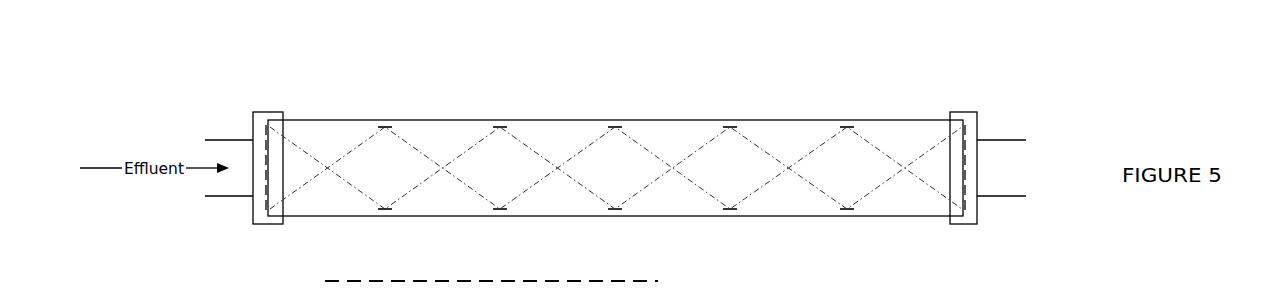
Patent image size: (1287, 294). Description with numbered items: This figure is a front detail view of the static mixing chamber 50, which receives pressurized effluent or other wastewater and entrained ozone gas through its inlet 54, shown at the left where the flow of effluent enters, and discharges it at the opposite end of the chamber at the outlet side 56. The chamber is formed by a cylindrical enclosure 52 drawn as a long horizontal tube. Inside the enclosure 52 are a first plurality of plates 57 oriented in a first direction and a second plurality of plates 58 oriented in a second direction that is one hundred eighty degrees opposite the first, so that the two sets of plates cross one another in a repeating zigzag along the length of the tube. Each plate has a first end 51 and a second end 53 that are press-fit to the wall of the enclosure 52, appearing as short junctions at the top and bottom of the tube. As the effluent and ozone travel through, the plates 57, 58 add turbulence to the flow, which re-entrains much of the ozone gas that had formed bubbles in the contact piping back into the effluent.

The static mixing chamber 50 is at (556, 90).
The first end 51 is at (385, 210).
The cylindrical enclosure 52 is at (647, 118).
The second end 53 is at (385, 126).
The inlet 54 is at (215, 140).
The outlet pipe 56 is at (1005, 197).
The first plurality of plates 57 is at (352, 188).
The second plurality of plates 58 is at (335, 160).